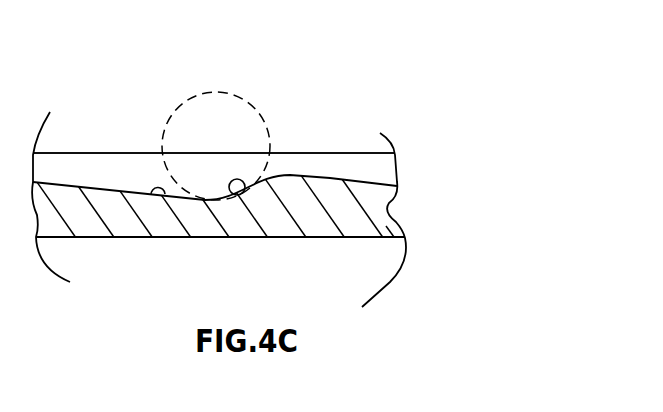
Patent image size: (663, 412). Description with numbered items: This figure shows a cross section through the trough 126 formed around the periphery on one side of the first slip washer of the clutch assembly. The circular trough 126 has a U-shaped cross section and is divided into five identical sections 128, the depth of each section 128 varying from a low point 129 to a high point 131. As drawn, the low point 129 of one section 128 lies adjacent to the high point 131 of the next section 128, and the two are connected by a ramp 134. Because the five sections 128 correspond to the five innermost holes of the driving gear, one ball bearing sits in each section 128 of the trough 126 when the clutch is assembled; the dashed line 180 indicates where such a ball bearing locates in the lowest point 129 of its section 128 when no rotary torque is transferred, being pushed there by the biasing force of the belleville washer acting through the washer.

The trough 126 is at (205, 132).
The section 128 is at (91, 167).
The low point 129 is at (161, 193).
The high point 131 is at (308, 177).
The ramp 134 is at (226, 190).
The dashed line 180 is at (262, 97).